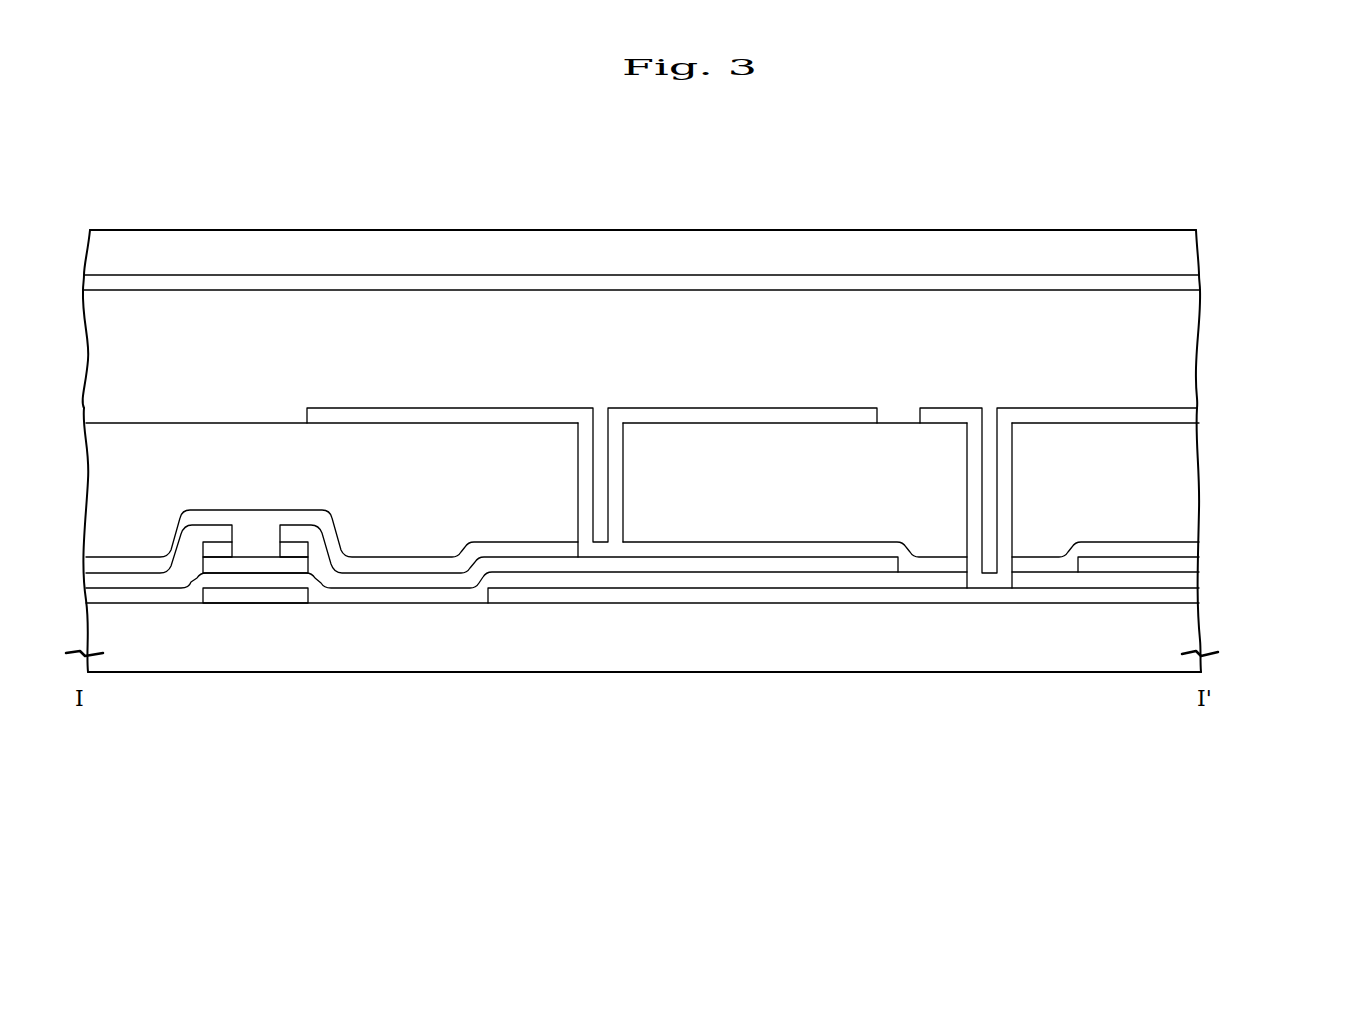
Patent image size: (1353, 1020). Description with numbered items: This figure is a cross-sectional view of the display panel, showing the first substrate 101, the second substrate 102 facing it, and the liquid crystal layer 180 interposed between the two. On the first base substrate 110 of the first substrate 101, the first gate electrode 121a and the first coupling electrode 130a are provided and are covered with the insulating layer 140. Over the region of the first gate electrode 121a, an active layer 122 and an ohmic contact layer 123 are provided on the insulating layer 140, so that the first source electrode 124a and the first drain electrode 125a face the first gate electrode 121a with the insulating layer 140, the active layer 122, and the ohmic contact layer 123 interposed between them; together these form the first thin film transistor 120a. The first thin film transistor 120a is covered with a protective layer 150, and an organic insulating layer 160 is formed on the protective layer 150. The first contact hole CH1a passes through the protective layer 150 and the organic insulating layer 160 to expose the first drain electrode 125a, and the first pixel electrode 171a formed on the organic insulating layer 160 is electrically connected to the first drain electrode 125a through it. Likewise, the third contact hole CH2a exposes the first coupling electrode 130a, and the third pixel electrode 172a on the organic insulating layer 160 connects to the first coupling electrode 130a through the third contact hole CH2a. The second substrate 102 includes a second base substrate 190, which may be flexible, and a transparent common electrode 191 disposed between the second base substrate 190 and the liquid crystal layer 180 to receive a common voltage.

The second substrate 102 is at (709, 263).
The second base substrate 190 is at (1192, 249).
The common electrode 191 is at (1192, 281).
The liquid crystal layer 180 is at (1192, 350).
The first substrate 101 is at (717, 597).
The first base substrate 110 is at (1192, 624).
The first coupling electrode 130a is at (740, 595).
The insulating layer 140 is at (1192, 581).
The first thin film transistor 120a is at (688, 648).
The first gate electrode 121a is at (255, 597).
The active layer 122 is at (290, 567).
The ohmic contact layer 123 is at (218, 550).
The first source electrode 124a is at (152, 580).
The first drain electrode 125a is at (785, 625).
The protective layer 150 is at (1192, 547).
The organic insulating layer 160 is at (1192, 478).
The first contact hole CH1a is at (623, 483).
The third contact hole CH2a is at (1012, 480).
The first pixel electrode 171a is at (798, 415).
The third pixel electrode 172a is at (1192, 413).